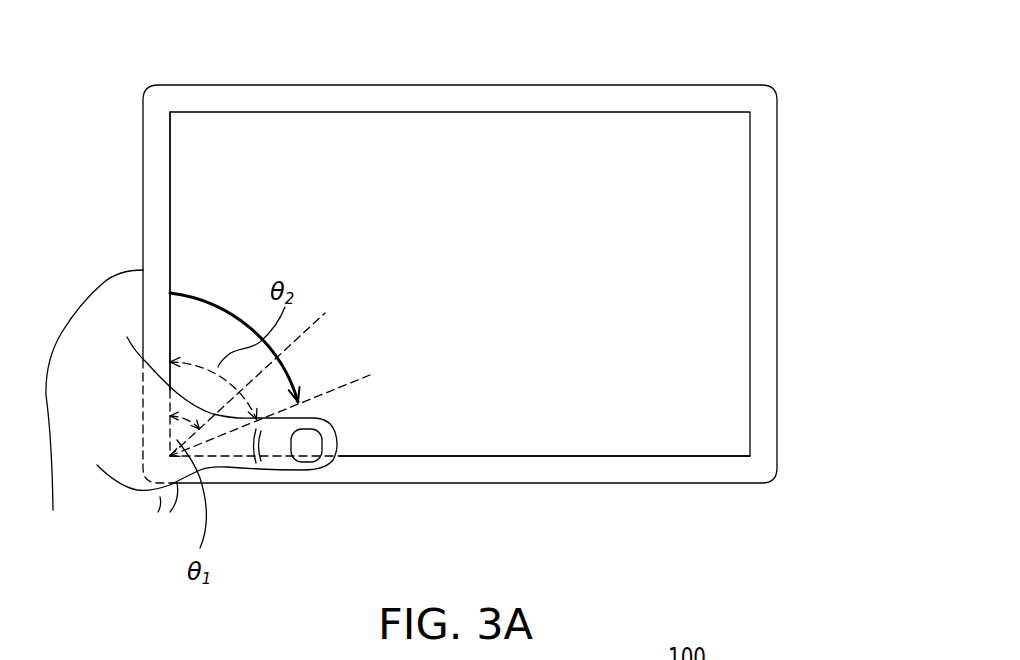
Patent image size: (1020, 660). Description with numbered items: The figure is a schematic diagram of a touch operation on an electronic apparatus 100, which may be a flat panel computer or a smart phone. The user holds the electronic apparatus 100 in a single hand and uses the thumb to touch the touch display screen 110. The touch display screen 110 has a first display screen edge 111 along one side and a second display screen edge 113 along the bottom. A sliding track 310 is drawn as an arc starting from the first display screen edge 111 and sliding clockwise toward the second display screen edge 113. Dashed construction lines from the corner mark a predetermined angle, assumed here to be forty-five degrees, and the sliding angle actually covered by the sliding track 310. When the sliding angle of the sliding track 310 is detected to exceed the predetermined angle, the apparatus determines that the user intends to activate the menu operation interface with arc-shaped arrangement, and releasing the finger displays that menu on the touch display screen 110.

The electronic apparatus 100 is at (655, 85).
The touch display screen 110 is at (585, 130).
The first display screen edge 111 is at (170, 172).
The second display screen edge 113 is at (417, 457).
The sliding track 310 is at (290, 372).